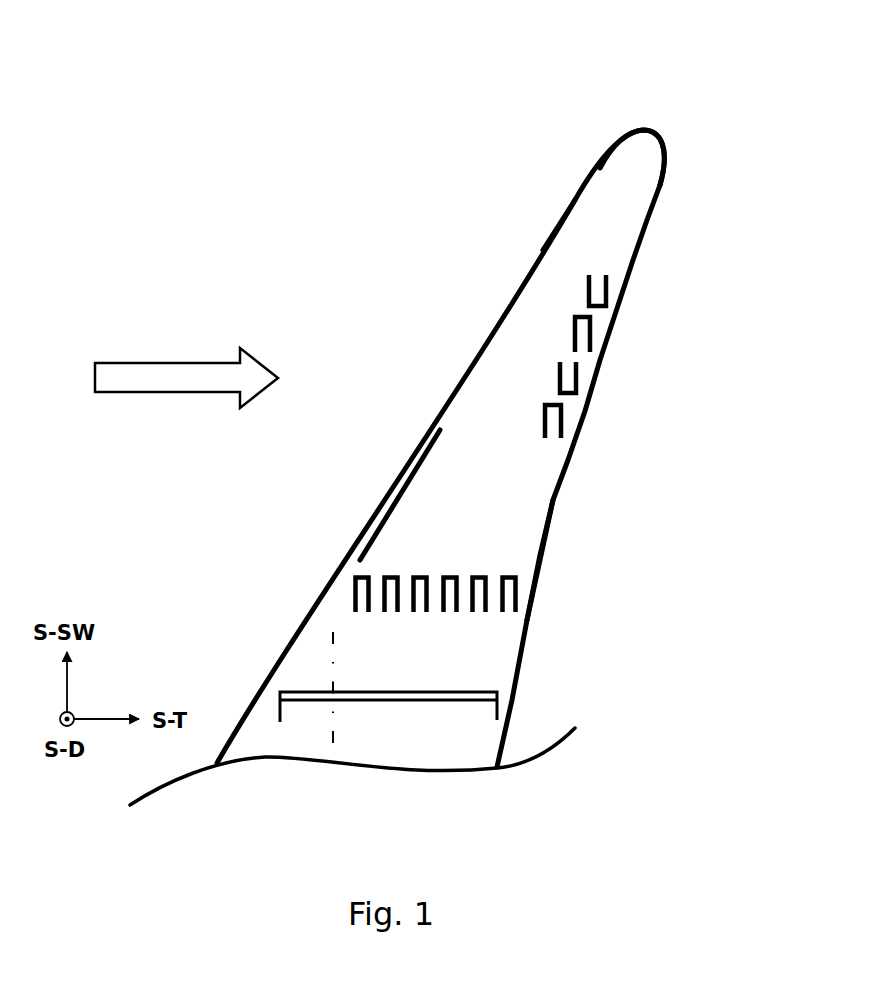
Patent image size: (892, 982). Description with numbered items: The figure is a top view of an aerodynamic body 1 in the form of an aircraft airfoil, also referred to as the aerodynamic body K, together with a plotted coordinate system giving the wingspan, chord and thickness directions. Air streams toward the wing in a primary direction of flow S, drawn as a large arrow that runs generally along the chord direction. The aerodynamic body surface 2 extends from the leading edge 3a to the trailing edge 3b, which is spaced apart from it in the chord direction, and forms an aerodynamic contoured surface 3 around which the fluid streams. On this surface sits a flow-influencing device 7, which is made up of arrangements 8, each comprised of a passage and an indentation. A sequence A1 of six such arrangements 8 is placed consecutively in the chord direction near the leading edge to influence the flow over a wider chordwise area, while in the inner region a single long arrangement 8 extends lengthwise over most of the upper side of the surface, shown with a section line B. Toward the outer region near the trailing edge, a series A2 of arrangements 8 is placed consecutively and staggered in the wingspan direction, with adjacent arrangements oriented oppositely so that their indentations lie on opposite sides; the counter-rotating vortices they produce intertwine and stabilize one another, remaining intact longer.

The aerodynamic body 1 is at (573, 130).
The aerodynamic body surface 2 is at (560, 250).
The aerodynamic contoured surface 3 is at (642, 182).
The leading edge 3a is at (396, 482).
The trailing edge 3b is at (554, 555).
The flow-influencing device 7 is at (540, 498).
The arrangement 8 is at (608, 292).
The sequence of arrangements A1 is at (320, 560).
The series of arrangements A2 is at (511, 377).
The aerodynamic body K is at (453, 207).
The primary direction of flow S is at (186, 369).
The section line B- B is at (347, 638).